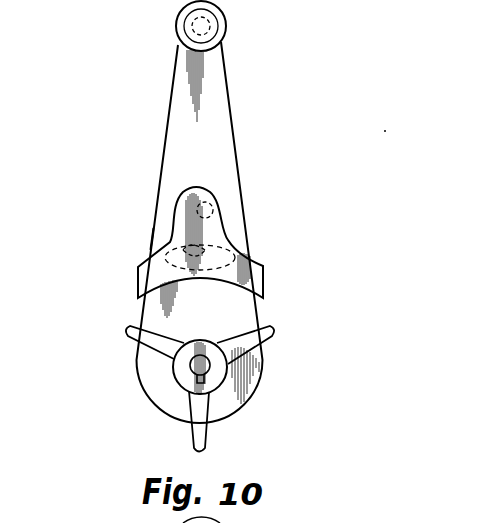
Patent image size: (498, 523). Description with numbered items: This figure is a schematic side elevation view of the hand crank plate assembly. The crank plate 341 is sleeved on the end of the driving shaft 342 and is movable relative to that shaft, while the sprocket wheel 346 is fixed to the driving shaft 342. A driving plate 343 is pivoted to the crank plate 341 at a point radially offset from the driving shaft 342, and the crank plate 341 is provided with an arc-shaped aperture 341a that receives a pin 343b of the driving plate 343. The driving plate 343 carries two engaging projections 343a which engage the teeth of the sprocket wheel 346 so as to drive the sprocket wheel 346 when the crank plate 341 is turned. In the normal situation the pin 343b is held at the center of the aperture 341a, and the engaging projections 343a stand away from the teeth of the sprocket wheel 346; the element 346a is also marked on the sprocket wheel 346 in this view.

The crank plate 341 is at (217, 123).
The arc-shaped aperture 341a is at (154, 235).
The driving shaft 342 is at (172, 367).
The driving plate 343 is at (215, 232).
The engaging projections 343a is at (137, 279).
The pin 343b is at (180, 246).
The sprocket wheel 346 is at (219, 389).
The spoke 346a is at (222, 384).